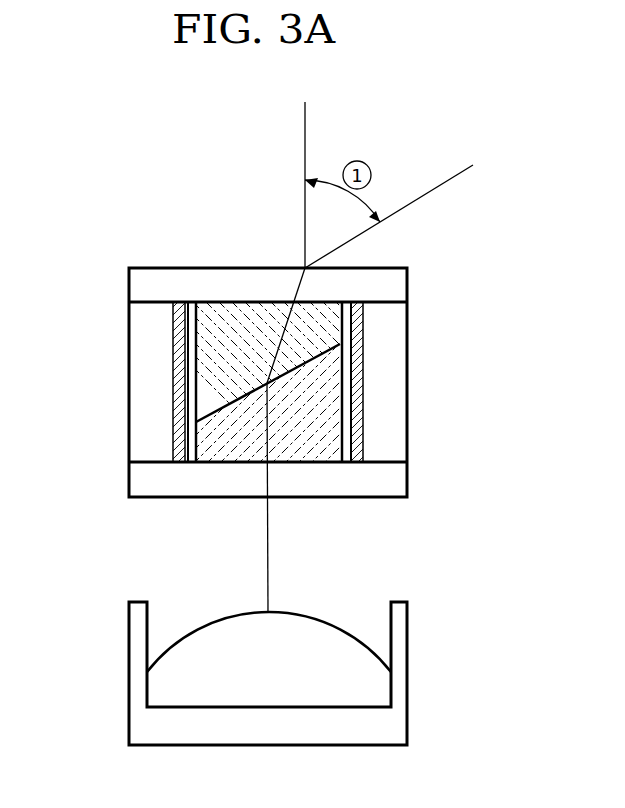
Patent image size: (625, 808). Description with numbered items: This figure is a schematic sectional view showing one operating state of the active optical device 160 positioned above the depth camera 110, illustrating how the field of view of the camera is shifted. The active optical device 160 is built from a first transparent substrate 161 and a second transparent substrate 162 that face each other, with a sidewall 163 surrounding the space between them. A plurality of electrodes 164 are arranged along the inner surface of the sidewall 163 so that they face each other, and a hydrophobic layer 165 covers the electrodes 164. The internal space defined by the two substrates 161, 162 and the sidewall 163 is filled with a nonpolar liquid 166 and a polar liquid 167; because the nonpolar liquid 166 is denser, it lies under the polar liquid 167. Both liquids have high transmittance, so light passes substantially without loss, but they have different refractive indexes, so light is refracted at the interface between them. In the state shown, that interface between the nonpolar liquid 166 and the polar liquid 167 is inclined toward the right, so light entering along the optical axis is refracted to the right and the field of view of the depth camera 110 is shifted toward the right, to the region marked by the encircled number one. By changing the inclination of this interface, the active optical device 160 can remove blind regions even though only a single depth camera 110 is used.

The active optical device 160 is at (124, 245).
The first transparent substrate 161 is at (138, 480).
The second transparent substrate 162 is at (138, 283).
The sidewall 163 is at (152, 328).
The electrodes 164 is at (178, 367).
The hydrophobic layer 165 is at (197, 408).
The nonpolar liquid 166 is at (323, 410).
The polar liquid 167 is at (325, 322).
The depth camera 110 is at (138, 678).